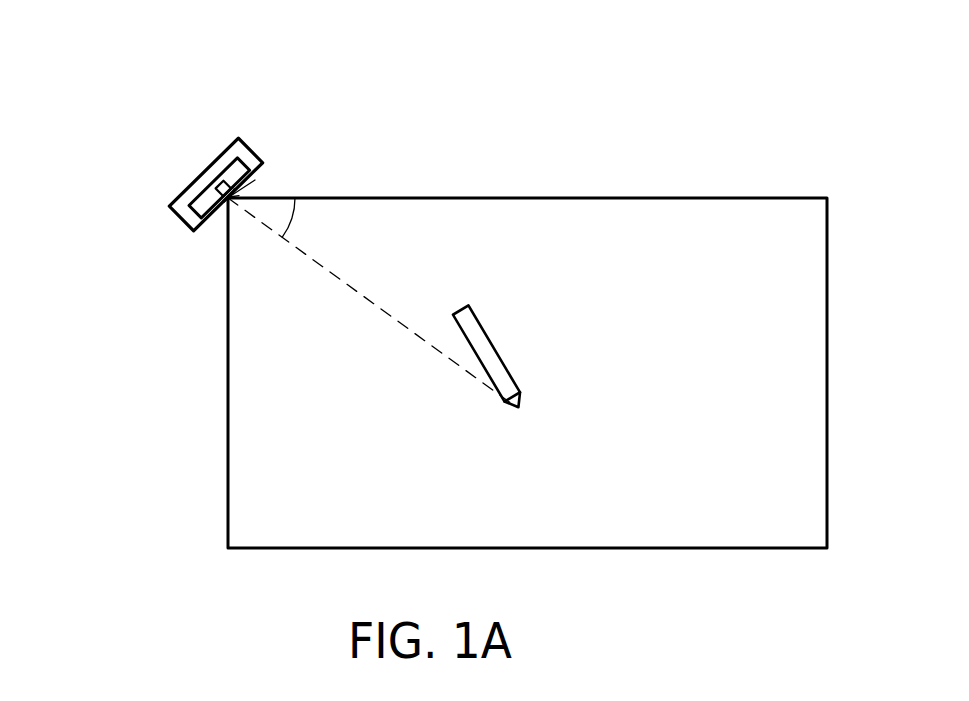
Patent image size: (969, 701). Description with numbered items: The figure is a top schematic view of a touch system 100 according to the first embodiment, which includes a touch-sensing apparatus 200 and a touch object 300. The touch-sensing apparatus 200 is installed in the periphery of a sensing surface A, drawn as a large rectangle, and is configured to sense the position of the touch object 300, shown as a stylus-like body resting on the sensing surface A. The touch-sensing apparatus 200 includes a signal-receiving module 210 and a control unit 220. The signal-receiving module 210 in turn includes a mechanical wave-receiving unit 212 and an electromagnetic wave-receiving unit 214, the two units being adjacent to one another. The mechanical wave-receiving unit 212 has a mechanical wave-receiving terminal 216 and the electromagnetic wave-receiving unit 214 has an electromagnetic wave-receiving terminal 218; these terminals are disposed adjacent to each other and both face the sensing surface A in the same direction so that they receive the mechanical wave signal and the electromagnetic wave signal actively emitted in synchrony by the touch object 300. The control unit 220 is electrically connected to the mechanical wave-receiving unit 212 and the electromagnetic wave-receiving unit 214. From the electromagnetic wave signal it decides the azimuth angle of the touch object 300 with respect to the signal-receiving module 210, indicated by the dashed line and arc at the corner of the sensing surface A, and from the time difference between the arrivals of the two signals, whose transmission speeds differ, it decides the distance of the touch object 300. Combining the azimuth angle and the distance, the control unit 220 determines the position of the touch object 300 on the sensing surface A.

The touch system 100 is at (442, 61).
The touch-sensing apparatus 200 is at (256, 138).
The signal-receiving module 210 is at (103, 180).
The mechanical wave-receiving unit 212 is at (198, 174).
The electromagnetic wave-receiving unit 214 is at (191, 222).
The mechanical wave-receiving terminal 216 is at (222, 200).
The electromagnetic wave-receiving terminal 218 is at (248, 200).
The control unit 220 is at (221, 158).
The touch object 300 is at (473, 330).
The sensing surface A is at (812, 276).